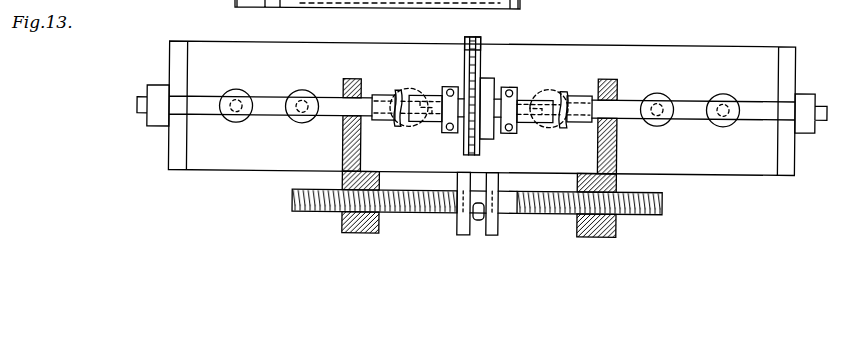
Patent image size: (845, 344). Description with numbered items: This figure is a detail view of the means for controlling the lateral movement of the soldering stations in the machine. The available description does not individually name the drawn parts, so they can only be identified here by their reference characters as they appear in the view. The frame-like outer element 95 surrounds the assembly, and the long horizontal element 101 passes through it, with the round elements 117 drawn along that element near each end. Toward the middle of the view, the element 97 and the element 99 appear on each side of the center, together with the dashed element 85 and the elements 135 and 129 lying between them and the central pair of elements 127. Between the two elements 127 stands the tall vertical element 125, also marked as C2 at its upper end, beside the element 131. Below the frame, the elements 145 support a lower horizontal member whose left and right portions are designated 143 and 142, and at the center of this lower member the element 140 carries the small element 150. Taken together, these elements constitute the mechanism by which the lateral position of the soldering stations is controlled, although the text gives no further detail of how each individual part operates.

The frame 95 is at (311, 37).
The shaft 101 is at (328, 111).
The rollers 117 is at (299, 98).
The bearing blocks 145 is at (343, 184).
The threaded rod left portion 143 is at (400, 214).
The threaded rod right portion 142 is at (628, 214).
The nut flanges 140 is at (511, 206).
The pin 150 is at (480, 222).
The sleeve 97 is at (398, 91).
The knurled nut 99 is at (398, 127).
The pinion 85 is at (413, 89).
The coupling 135 is at (431, 122).
The coupling 129 is at (545, 123).
The clamp 127 is at (450, 134).
The chain 125 is at (457, 77).
The chain C2 is at (481, 44).
The sprocket hub 131 is at (489, 80).